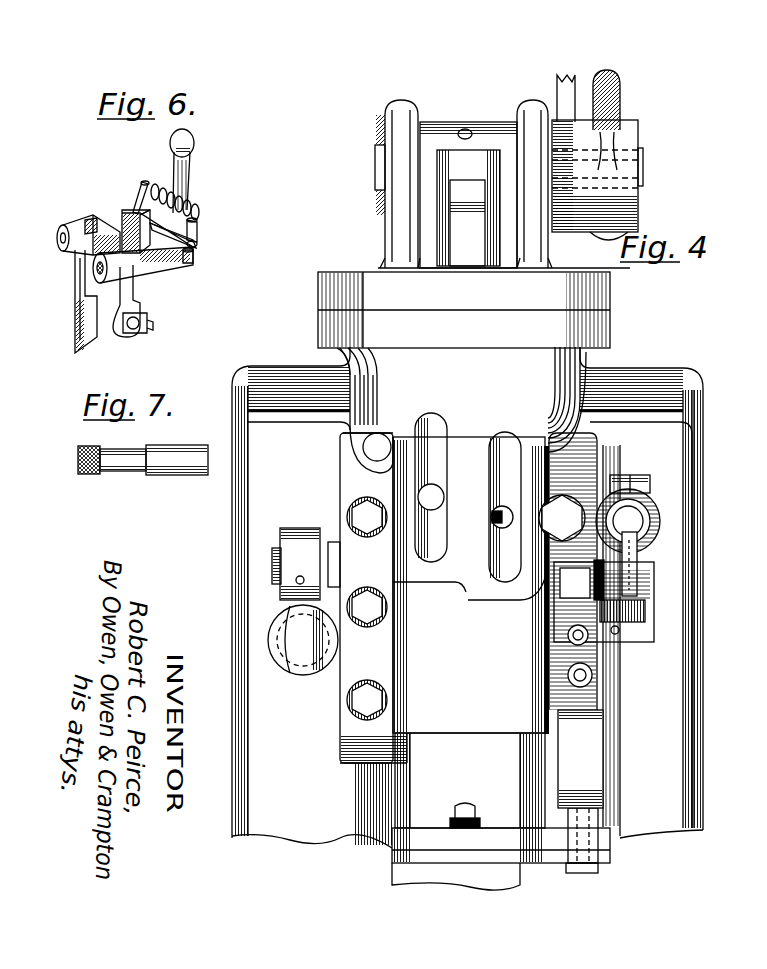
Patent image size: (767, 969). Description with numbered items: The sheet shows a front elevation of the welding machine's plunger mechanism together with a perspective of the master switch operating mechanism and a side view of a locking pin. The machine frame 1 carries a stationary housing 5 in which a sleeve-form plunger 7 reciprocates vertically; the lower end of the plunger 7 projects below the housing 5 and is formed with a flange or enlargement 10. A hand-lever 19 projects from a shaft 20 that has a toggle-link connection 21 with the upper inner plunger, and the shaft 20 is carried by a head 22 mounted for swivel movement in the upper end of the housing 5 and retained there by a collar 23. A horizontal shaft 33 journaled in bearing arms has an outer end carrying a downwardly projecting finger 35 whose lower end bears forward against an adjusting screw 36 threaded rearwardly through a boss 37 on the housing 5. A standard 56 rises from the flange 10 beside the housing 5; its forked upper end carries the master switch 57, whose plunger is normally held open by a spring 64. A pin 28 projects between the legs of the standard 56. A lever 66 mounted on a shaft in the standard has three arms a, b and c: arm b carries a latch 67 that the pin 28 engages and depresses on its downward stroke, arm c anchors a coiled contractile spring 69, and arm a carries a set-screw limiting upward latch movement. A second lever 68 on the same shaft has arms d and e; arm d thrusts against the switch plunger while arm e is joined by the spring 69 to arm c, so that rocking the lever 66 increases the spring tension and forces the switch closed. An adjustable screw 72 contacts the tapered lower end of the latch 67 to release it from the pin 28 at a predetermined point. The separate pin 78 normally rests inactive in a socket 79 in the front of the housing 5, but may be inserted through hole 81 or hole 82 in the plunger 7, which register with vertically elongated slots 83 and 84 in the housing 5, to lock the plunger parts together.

In FIG. 4, the machine frame 1 is at (690, 450).
In FIG. 4, the stationary housing or plunger carrying head 5 is at (548, 385).
In FIG. 4, the plunger 7 is at (470, 780).
In FIG. 4, the flange or enlargement 10 is at (600, 846).
In FIG. 4, the hand-lever 19 is at (620, 128).
In FIG. 4, the shaft 20 is at (375, 165).
In FIG. 4, the toggle-link connection 21 is at (487, 238).
In FIG. 4, the head 22 is at (380, 266).
In FIG. 4, the collar 23 is at (600, 295).
In FIG. 4, the pin 28 is at (548, 624).
In FIG. 4, the shaft 33 is at (330, 540).
In FIG. 4, the finger 35 is at (282, 600).
In FIG. 4, the adjusting screw 36 is at (300, 648).
In FIG. 4, the boss 37 is at (340, 660).
In FIG. 4, the standard 56 is at (590, 740).
In FIG. 4, the master switch 57 is at (648, 508).
In FIG. 4, the spring 64 is at (596, 560).
In FIG. 4, the lever 66 is at (600, 598).
In FIG. 6, the lever 66 is at (127, 267).
In FIG. 6, the latch 67 is at (80, 318).
In FIG. 4, the lever 68 is at (640, 612).
In FIG. 6, the lever 68 is at (177, 257).
In FIG. 6, the coiled contractile spring 69 is at (180, 198).
In FIG. 4, the adjustable screw 72 is at (592, 675).
In FIG. 7, the pin 78 is at (162, 474).
In FIG. 4, the socket 79 is at (381, 443).
In FIG. 4, the hole 81 is at (435, 492).
In FIG. 4, the hole 82 is at (498, 524).
In FIG. 4, the slot 83 is at (440, 425).
In FIG. 4, the slot 84 is at (508, 448).
In FIG. 4, the arm a is at (568, 640).
In FIG. 6, the arm a is at (127, 305).
In FIG. 6, the arm b is at (112, 230).
In FIG. 6, the arm c is at (130, 213).
In FIG. 4, the arm d is at (638, 565).
In FIG. 6, the arm d is at (188, 168).
In FIG. 4, the arm e is at (606, 615).
In FIG. 6, the arm e is at (197, 235).